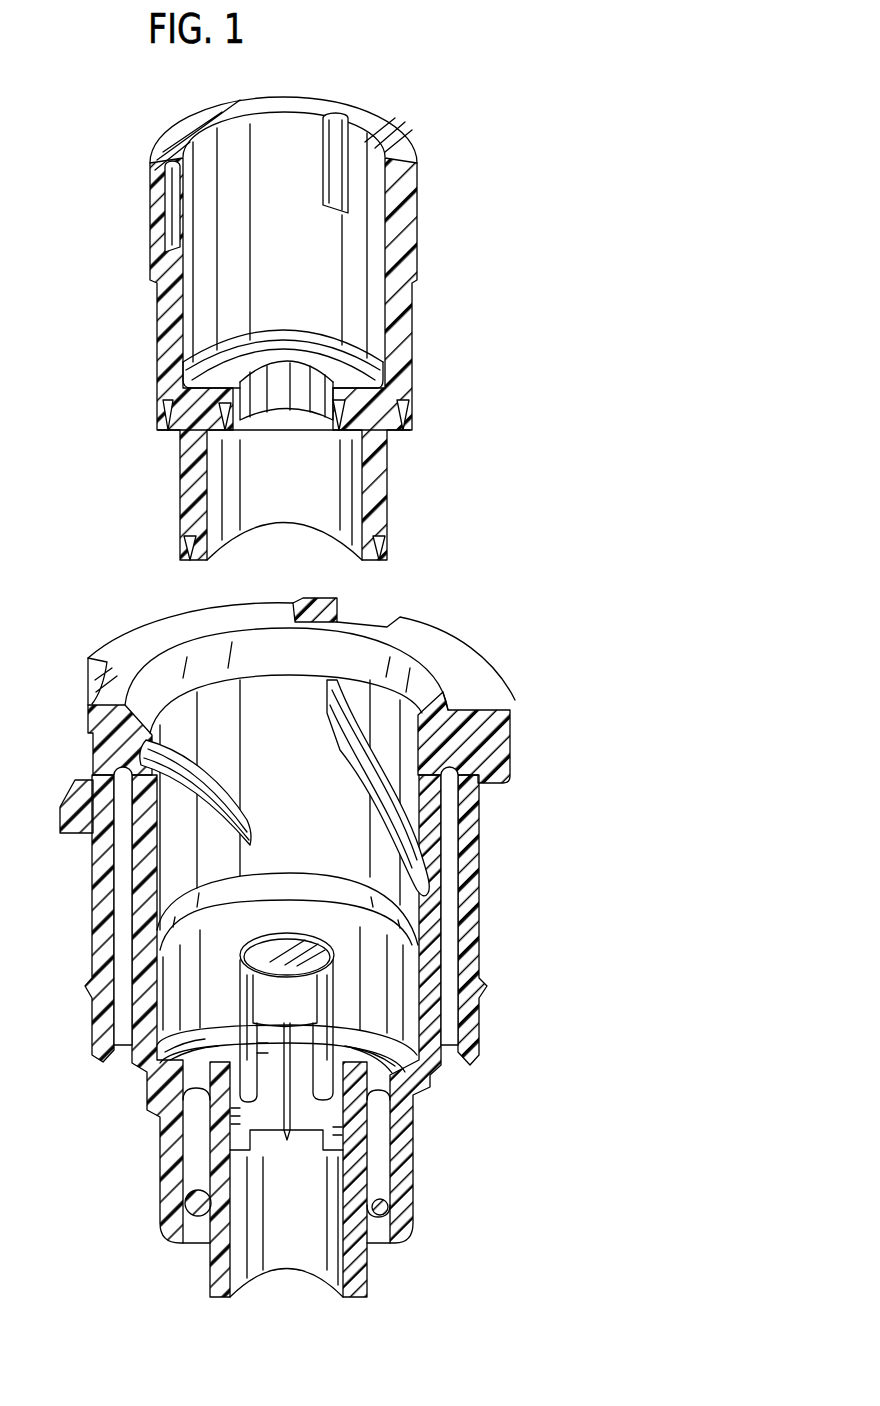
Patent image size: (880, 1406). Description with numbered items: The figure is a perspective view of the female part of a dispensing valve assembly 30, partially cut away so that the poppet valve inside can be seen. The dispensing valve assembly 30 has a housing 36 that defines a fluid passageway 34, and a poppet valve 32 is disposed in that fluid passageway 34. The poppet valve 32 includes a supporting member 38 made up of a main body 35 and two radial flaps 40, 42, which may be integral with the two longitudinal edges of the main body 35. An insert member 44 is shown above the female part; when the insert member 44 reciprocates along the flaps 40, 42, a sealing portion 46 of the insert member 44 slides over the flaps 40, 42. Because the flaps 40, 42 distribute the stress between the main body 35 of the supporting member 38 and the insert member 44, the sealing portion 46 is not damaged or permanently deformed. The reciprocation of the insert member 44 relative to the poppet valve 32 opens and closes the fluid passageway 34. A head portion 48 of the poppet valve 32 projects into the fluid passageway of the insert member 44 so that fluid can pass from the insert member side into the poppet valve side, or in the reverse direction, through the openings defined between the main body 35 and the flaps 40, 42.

The dispensing valve assembly 30 is at (515, 640).
The poppet valve 32 is at (187, 1190).
The fluid passageway 34 is at (383, 980).
The main body 35 is at (240, 1085).
The housing 36 is at (510, 698).
The supporting member 38 is at (225, 950).
The radial flap 40 is at (237, 1090).
The radial flap 42 is at (330, 1047).
The insert member 44 is at (418, 240).
The sealing portion 46 is at (292, 384).
The head portion 48 is at (339, 938).